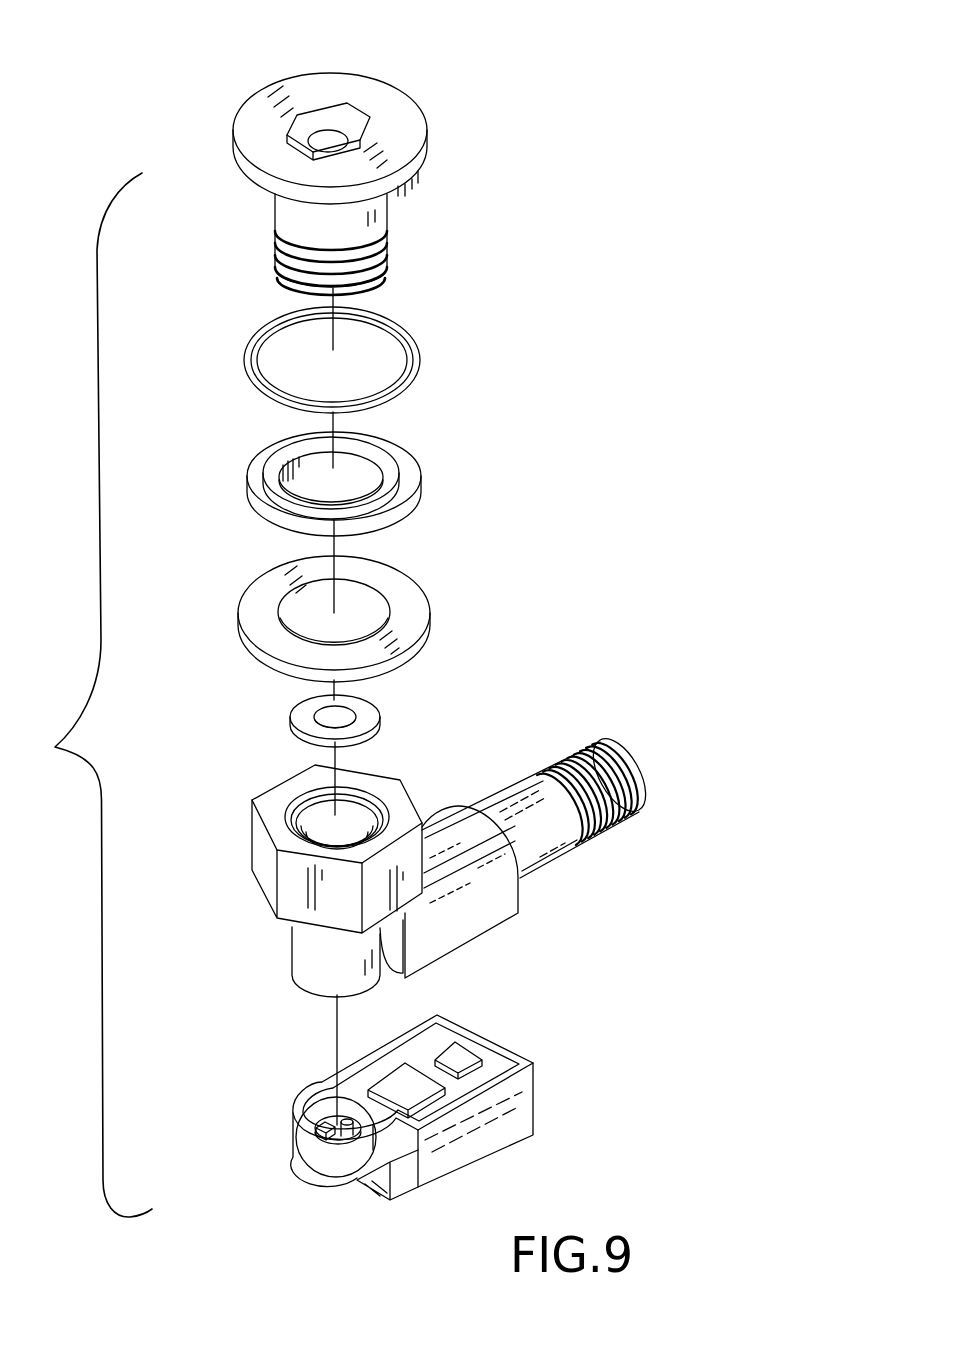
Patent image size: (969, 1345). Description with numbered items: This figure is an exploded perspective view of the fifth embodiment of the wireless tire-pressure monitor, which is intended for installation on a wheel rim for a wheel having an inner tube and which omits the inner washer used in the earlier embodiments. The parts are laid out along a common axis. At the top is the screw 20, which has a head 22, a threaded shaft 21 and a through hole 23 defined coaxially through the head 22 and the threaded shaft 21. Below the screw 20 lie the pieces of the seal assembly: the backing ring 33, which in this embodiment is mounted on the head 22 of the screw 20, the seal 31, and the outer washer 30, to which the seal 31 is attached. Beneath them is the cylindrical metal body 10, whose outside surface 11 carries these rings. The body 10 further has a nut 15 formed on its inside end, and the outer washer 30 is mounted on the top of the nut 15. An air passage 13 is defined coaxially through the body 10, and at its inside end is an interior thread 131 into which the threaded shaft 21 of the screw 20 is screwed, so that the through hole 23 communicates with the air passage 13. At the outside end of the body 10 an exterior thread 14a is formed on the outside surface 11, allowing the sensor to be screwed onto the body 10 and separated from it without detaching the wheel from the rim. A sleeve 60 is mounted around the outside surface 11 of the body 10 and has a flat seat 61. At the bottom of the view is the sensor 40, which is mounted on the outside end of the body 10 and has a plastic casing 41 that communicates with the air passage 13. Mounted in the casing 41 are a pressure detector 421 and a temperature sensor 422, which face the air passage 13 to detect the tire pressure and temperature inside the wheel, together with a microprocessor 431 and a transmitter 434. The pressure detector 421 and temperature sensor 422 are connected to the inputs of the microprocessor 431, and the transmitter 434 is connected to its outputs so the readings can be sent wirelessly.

The body 10 is at (428, 831).
The outside surface 11 is at (550, 867).
The air passage 13 is at (294, 797).
The interior thread 131 is at (294, 820).
The exterior thread 14a is at (598, 740).
The nut 15 is at (268, 880).
The screw 20 is at (370, 157).
The threaded shaft 21 is at (388, 218).
The head 22 is at (428, 152).
The through hole 23 is at (325, 130).
The outer washer 30 is at (408, 610).
The seal 31 is at (417, 478).
The backing ring 33 is at (412, 345).
The sensor 40 is at (418, 1082).
The casing 41 is at (531, 1100).
The pressure detector 421 is at (322, 1127).
The temperature sensor 422 is at (306, 1169).
The microprocessor 431 is at (392, 1080).
The transmitter 434 is at (446, 1052).
The sleeve 60 is at (479, 841).
The flat seat 61 is at (462, 946).